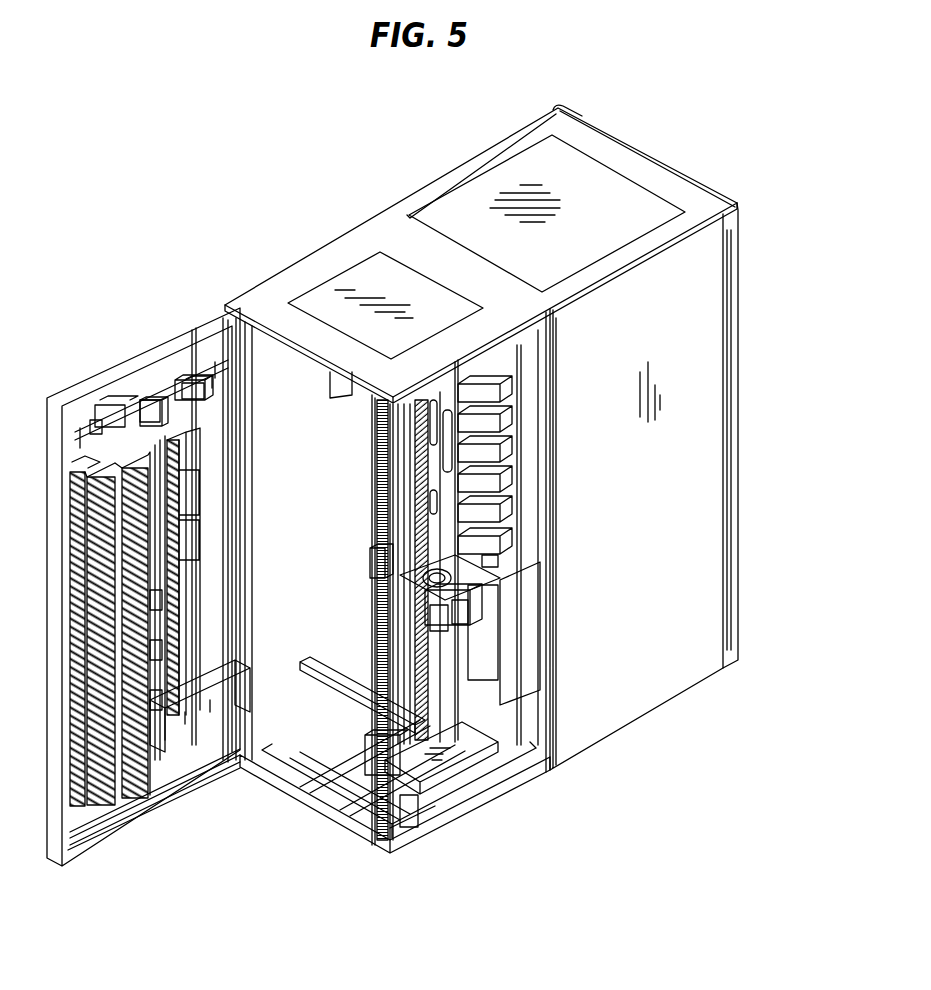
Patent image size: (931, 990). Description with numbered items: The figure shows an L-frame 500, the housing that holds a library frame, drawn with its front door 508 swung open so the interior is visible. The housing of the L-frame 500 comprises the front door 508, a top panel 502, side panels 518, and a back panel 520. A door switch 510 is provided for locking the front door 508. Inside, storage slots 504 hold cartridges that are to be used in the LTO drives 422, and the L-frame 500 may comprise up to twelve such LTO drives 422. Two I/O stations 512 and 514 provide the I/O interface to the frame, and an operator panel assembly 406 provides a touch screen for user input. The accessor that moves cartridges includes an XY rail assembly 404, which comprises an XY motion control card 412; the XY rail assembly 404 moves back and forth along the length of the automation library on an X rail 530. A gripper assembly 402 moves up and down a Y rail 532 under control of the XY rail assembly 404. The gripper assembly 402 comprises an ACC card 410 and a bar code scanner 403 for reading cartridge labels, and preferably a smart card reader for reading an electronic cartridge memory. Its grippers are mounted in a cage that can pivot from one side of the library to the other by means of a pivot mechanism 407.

The L-frame 500 is at (699, 128).
The top panel 502 is at (325, 260).
The side panels 518 is at (445, 176).
The back panel 520 is at (730, 362).
The front door 508 is at (100, 380).
The operator panel assembly 406 is at (190, 385).
The I/O station 512 is at (147, 408).
The I/O station 514 is at (187, 583).
The storage slots 504 is at (368, 600).
The door switch 510 is at (348, 390).
The Y rail 532 is at (410, 477).
The ACC card 410 is at (383, 550).
The LTO drives 422 is at (470, 392).
The pivot mechanism 407 is at (487, 562).
The gripper assembly 402 is at (455, 590).
The bar code scanner 403 is at (417, 612).
The X rail 530 is at (307, 683).
The XY rail assembly 404 is at (430, 770).
The XY motion control card 412 is at (417, 803).